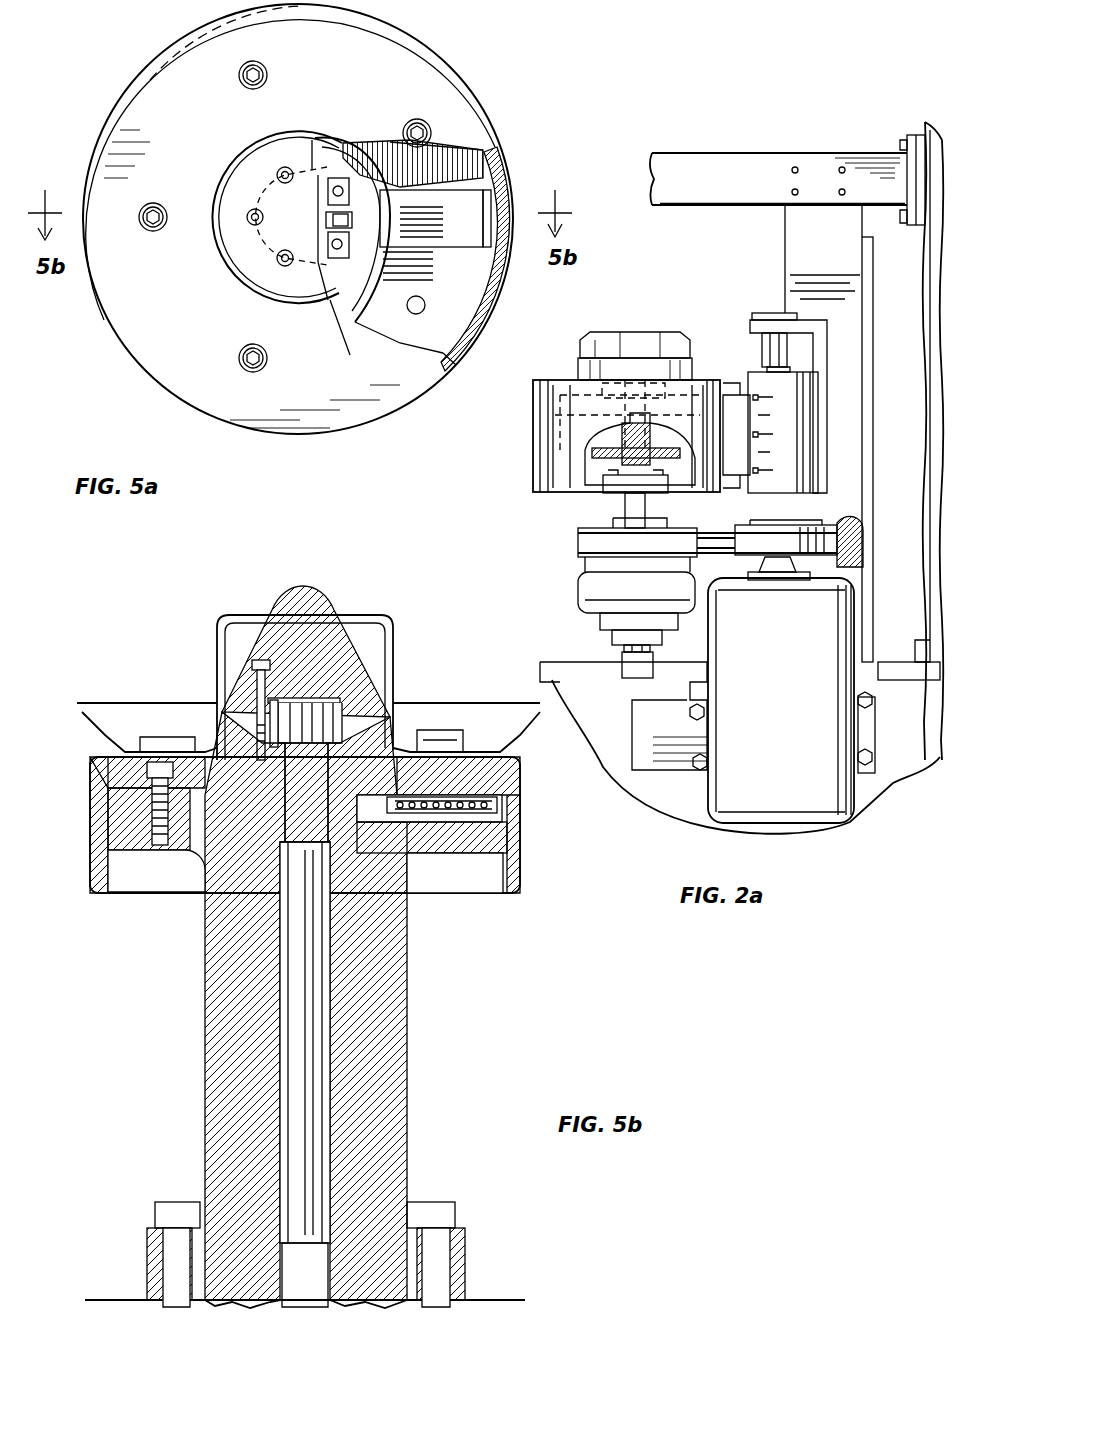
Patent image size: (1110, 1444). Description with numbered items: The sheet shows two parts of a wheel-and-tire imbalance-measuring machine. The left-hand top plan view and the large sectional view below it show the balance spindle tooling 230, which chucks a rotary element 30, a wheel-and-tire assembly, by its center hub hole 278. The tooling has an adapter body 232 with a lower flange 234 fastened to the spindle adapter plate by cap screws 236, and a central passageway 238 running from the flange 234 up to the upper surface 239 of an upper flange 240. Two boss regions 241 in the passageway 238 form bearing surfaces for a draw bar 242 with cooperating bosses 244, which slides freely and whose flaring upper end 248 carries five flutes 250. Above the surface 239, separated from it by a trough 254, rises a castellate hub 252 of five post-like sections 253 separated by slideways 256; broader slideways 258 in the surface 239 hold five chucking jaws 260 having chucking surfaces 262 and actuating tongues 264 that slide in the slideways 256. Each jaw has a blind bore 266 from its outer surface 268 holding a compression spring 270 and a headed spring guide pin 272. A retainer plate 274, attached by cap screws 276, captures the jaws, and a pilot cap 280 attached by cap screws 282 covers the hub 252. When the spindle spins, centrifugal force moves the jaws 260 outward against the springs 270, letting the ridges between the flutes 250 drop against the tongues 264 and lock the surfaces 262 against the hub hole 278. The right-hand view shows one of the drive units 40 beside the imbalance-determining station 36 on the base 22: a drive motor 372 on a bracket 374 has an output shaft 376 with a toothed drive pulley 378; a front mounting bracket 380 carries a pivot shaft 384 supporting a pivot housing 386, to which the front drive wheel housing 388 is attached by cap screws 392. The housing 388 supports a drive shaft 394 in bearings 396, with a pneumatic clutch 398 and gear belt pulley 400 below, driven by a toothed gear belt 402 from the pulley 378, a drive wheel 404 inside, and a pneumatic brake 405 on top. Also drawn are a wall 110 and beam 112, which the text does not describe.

In FIG. 2A, the supporting base portion 22 is at (893, 783).
In FIG. 2A, the rotary elements 30 is at (506, 680).
In FIG. 5B, the rotary elements 30 is at (503, 685).
In FIG. 2A, the imbalance-determining station insert 36 is at (556, 595).
In FIG. 2A, the wheel-and-tire drive unit 40 is at (504, 485).
In FIG. 2A, the wall 110 is at (937, 330).
In FIG. 2A, the beam 112 is at (745, 160).
In FIG. 5A, the balance spindle tooling 230 is at (508, 92).
In FIG. 5B, the balance spindle tooling 230 is at (512, 1095).
In FIG. 5B, the adapter body 232 is at (380, 1010).
In FIG. 5B, the lower flange 234 is at (465, 1243).
In FIG. 5B, the cap screws 236 is at (440, 1215).
In FIG. 5B, the passageway 238 is at (280, 998).
In FIG. 5A, the upper surface 239 is at (470, 283).
In FIG. 5B, the upper surface 239 is at (98, 790).
In FIG. 5A, the upper flange 240 is at (473, 330).
In FIG. 5B, the upper flange 240 is at (115, 825).
In FIG. 5B, the boss regions 241 is at (283, 880).
In FIG. 5B, the draw bar 242 is at (300, 1040).
In FIG. 5B, the bosses 244 is at (278, 900).
In FIG. 5A, the upper end 248 is at (323, 198).
In FIG. 5B, the upper end 248 is at (380, 860).
In FIG. 5A, the flutes 250 is at (313, 200).
In FIG. 5B, the flutes 250 is at (250, 790).
In FIG. 5A, the castellate hub 252 is at (350, 310).
In FIG. 5B, the castellate hub 252 is at (228, 735).
In FIG. 5A, the post-like sections 253 is at (342, 193).
In FIG. 5B, the post-like sections 253 is at (300, 698).
In FIG. 5B, the trough 254 is at (230, 750).
In FIG. 5A, the slideways 256 is at (320, 220).
In FIG. 5B, the slideways 256 is at (292, 585).
In FIG. 5A, the slideways 258 is at (403, 200).
In FIG. 5B, the slideways 258 is at (393, 830).
In FIG. 5A, the chucking jaws 260 is at (362, 142).
In FIG. 5B, the chucking jaws 260 is at (440, 740).
In FIG. 5A, the chucking surfaces 262 is at (292, 132).
In FIG. 5B, the chucking surfaces 262 is at (388, 738).
In FIG. 5A, the actuating tongues 264 is at (356, 254).
In FIG. 5B, the actuating tongues 264 is at (340, 780).
In FIG. 5B, the blind bore 266 is at (505, 800).
In FIG. 5B, the radially outer surface 268 is at (500, 838).
In FIG. 5A, the compression spring 270 is at (435, 235).
In FIG. 5B, the compression spring 270 is at (390, 830).
In FIG. 5A, the spring guide pin 272 is at (507, 233).
In FIG. 5B, the spring guide pin 272 is at (462, 810).
In FIG. 5A, the retainer plate 274 is at (214, 42).
In FIG. 5B, the retainer plate 274 is at (100, 760).
In FIG. 5A, the cap screws 276 is at (150, 207).
In FIG. 5B, the cap screws 276 is at (160, 845).
In FIG. 5B, the hub hole 278 is at (340, 700).
In FIG. 5A, the pilot cap 280 is at (240, 243).
In FIG. 5B, the pilot cap 280 is at (355, 640).
In FIG. 5A, the cap screws 282 is at (247, 210).
In FIG. 5B, the cap screws 282 is at (250, 660).
In FIG. 2A, the drive motor 372 is at (850, 827).
In FIG. 2A, the bracket 374 is at (875, 525).
In FIG. 2A, the output shaft 376 is at (780, 560).
In FIG. 2A, the toothed drive pulley 378 is at (853, 523).
In FIG. 2A, the front drive unit mounting bracket 380 is at (842, 358).
In FIG. 2A, the pivot shaft 384 is at (758, 340).
In FIG. 2A, the pivot housing 386 is at (760, 387).
In FIG. 2A, the front drive wheel housing 388 is at (563, 382).
In FIG. 2A, the cap screws 392 is at (767, 470).
In FIG. 2A, the drive shaft 394 is at (620, 440).
In FIG. 2A, the bearings 396 is at (708, 354).
In FIG. 2A, the pneumatic clutch 398 is at (600, 600).
In FIG. 2A, the toothed gear belt pulley 400 is at (578, 555).
In FIG. 2A, the toothed gear belt 402 is at (715, 545).
In FIG. 2A, the drive wheel 404 is at (560, 447).
In FIG. 2A, the pneumatic brake 405 is at (627, 330).